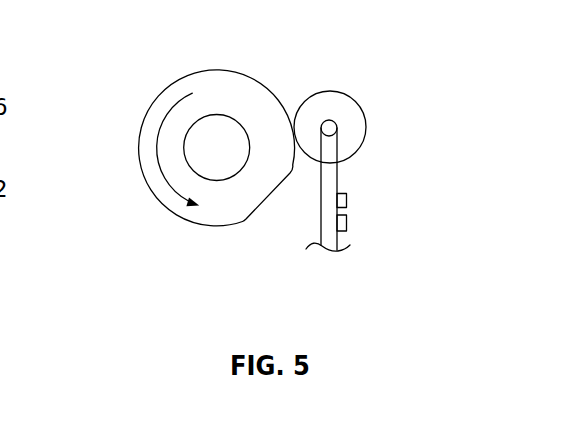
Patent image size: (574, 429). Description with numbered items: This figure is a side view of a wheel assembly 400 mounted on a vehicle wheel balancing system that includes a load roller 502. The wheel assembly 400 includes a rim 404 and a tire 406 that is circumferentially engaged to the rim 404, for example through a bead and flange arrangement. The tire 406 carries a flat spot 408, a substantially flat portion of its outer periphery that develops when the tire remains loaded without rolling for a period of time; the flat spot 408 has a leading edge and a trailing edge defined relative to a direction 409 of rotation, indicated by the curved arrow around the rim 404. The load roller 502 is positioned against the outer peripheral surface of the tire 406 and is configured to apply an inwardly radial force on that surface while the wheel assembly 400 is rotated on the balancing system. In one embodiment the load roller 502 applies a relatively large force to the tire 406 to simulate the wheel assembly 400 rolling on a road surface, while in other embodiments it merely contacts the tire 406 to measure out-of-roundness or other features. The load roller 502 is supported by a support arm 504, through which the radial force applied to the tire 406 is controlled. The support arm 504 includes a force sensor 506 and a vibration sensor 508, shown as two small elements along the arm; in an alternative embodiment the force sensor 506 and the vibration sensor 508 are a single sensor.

The wheel assembly 400 is at (112, 26).
The rim 404 is at (236, 160).
The tire 406 is at (215, 213).
The flat spot 408 is at (288, 262).
The direction of rotation 409 is at (162, 173).
The load roller 502 is at (325, 91).
The support arm 504 is at (337, 147).
The force sensor 506 is at (346, 200).
The vibration sensor 508 is at (346, 227).